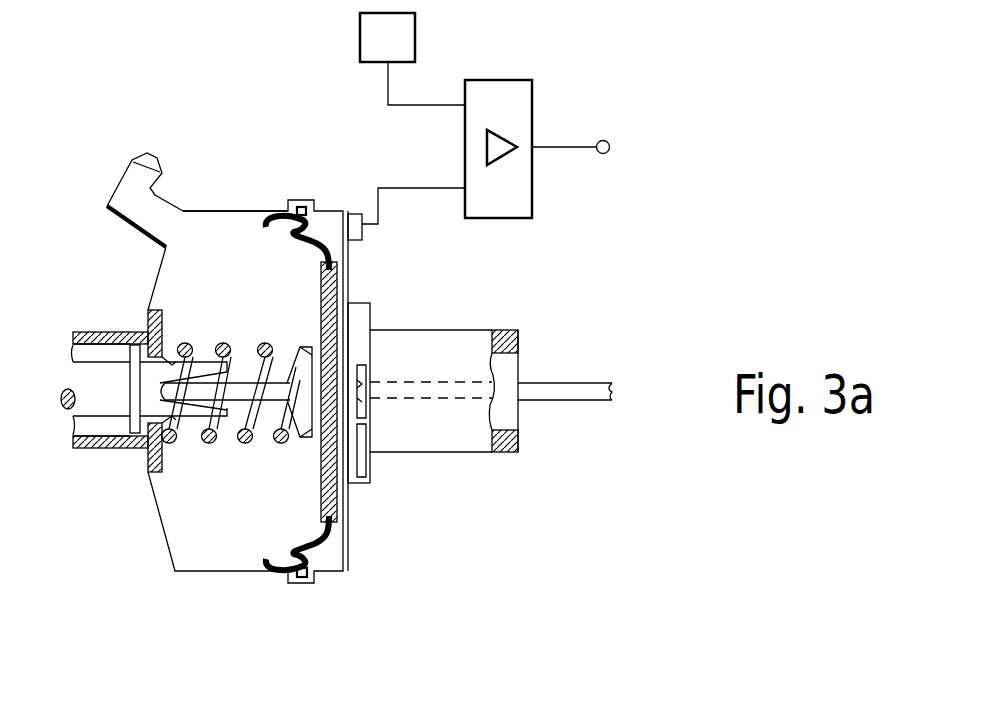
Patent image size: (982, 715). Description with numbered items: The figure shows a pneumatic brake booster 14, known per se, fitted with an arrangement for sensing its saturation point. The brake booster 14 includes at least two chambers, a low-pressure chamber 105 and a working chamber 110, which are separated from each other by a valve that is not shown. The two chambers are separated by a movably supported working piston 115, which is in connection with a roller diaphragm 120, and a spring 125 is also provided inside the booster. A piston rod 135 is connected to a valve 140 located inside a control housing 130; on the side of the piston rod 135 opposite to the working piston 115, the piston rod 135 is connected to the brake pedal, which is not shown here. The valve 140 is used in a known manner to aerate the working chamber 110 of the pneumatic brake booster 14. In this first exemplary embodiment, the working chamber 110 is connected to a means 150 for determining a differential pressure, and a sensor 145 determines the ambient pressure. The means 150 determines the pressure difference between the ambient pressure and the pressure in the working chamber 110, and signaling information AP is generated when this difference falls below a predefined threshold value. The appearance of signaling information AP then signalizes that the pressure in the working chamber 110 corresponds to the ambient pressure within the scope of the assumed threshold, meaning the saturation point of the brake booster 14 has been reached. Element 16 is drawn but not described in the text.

The pneumatic brake booster 14 is at (175, 572).
The tubular connection / push rod guide 16 is at (102, 449).
The low-pressure chamber 105 is at (217, 227).
The working chamber 110 is at (325, 220).
The working piston 115 is at (317, 283).
The roller diaphragm 120 is at (270, 557).
The spring 125 is at (208, 442).
The control housing 130 is at (463, 455).
The piston rod 135 is at (585, 401).
The valve 140 is at (360, 485).
The sensor for determining the ambient pressure 145 is at (360, 31).
The means for determining a differential pressure 150 is at (510, 87).